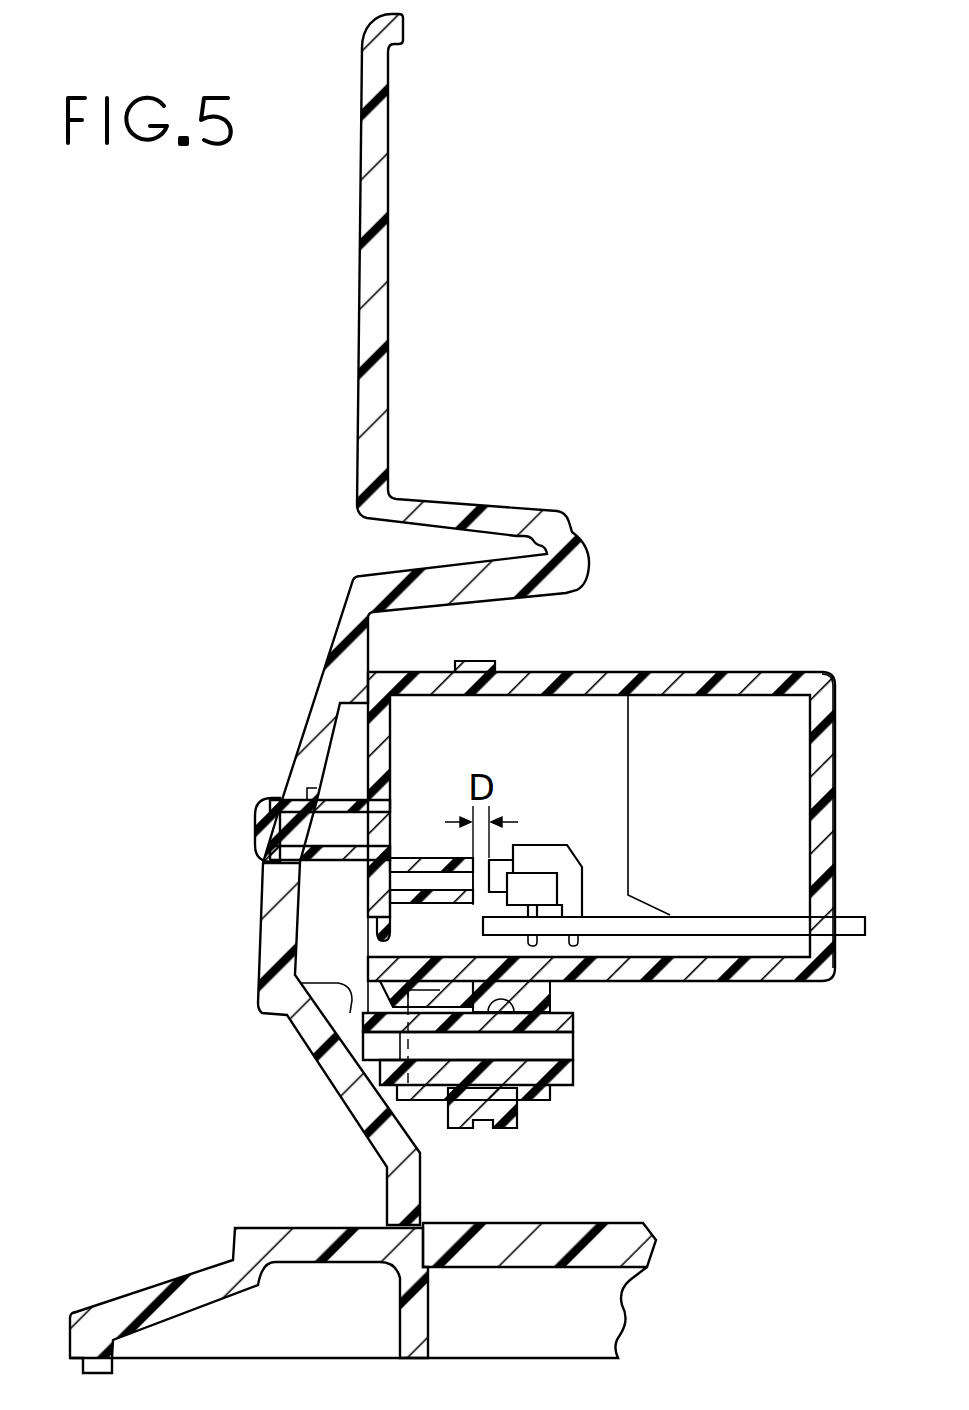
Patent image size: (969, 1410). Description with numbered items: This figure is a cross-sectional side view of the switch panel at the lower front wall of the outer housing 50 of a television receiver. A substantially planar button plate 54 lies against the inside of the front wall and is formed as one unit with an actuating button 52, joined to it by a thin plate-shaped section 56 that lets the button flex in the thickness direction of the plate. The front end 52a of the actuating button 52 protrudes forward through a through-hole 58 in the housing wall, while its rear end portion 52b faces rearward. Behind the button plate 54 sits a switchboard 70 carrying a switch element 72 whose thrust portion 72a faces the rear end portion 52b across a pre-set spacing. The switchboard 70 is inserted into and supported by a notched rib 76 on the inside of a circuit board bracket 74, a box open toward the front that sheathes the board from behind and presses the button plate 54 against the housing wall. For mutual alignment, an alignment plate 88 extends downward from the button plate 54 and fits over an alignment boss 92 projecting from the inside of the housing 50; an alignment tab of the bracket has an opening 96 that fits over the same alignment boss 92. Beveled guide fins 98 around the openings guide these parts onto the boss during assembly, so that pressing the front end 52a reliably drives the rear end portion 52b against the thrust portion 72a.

The outer housing 50 is at (337, 618).
The actuating button 52 is at (395, 855).
The front end 52a is at (262, 806).
The rear end portion 52b is at (418, 937).
The button plate 54 is at (418, 672).
The thin plate-shaped section 56 is at (393, 746).
The through-hole 58 is at (277, 862).
The switchboard 70 is at (660, 932).
The switch element 72 is at (564, 847).
The thrust portion 72a is at (503, 856).
The circuit board bracket 74 is at (743, 672).
The notched rib 76 is at (665, 730).
The alignment plate 88 is at (475, 1128).
The alignment boss 92 is at (555, 1087).
The opening 96 is at (545, 1122).
The guide fin 98 is at (375, 1003).